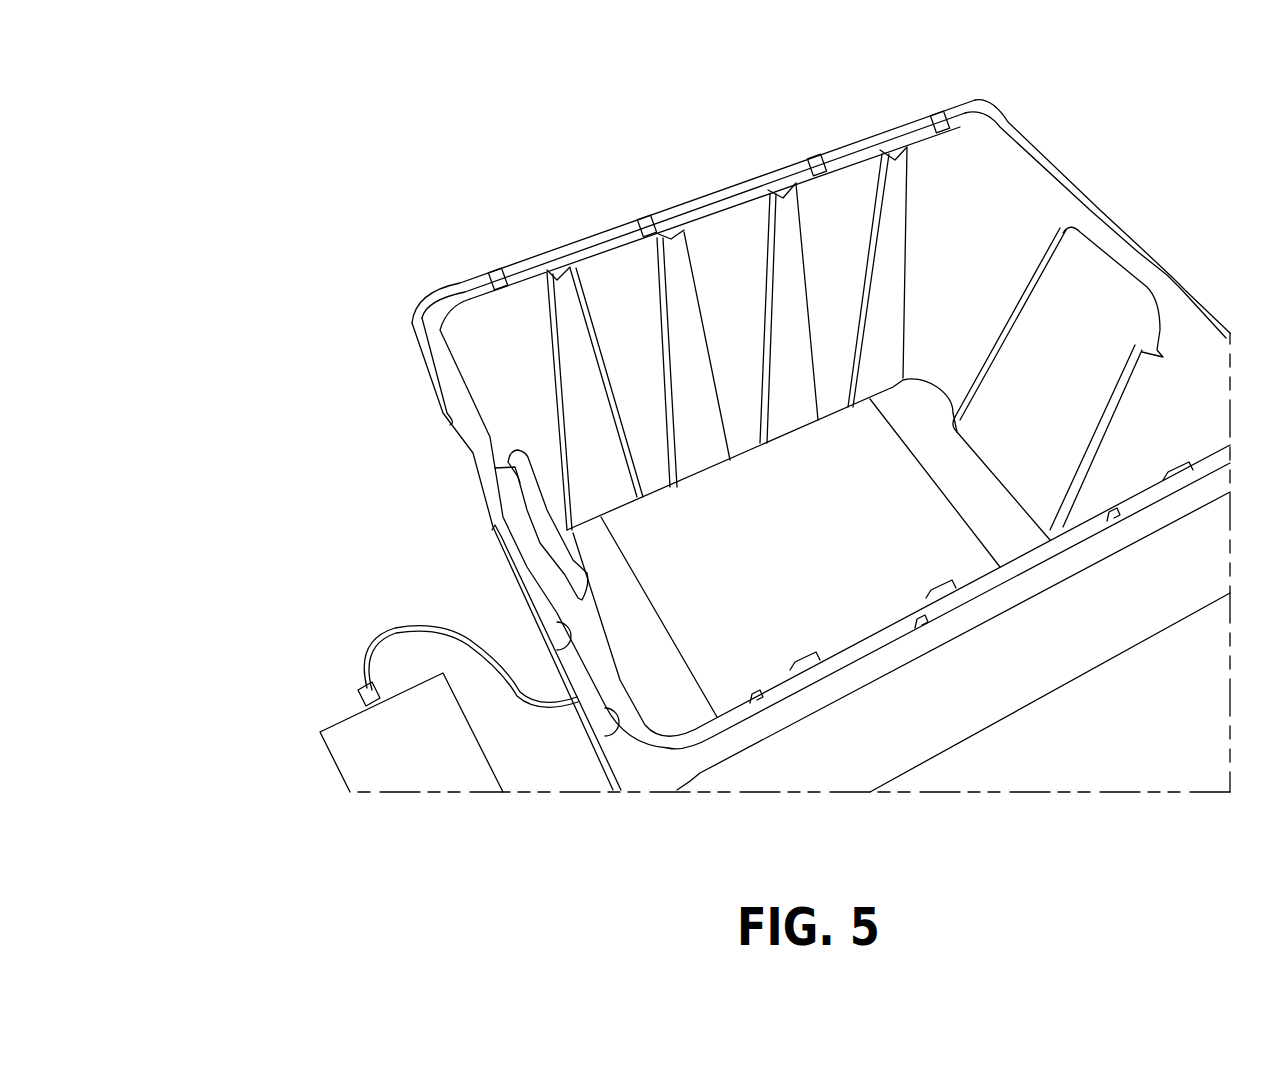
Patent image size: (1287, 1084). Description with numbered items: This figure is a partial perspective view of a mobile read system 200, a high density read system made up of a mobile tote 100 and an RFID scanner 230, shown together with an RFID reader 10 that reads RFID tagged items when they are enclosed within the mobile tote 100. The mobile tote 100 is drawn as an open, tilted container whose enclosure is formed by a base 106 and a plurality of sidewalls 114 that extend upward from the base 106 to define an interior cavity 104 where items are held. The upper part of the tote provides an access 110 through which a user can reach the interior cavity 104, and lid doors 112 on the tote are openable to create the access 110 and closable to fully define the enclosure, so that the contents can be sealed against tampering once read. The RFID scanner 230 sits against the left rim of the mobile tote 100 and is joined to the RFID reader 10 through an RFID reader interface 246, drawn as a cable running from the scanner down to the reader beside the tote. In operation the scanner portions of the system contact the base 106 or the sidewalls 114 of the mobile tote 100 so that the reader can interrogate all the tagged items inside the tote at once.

The RFID reader 10 is at (307, 770).
The mobile tote 100 is at (690, 195).
The interior cavity 104 is at (1000, 157).
The base 106 is at (830, 563).
The access 110 is at (1053, 150).
The lid doors 112 is at (1008, 695).
The sidewalls 114 is at (1205, 433).
The mobile read system 200 is at (450, 458).
The RFID scanner 230 is at (493, 558).
The RFID reader interface 246 is at (577, 700).